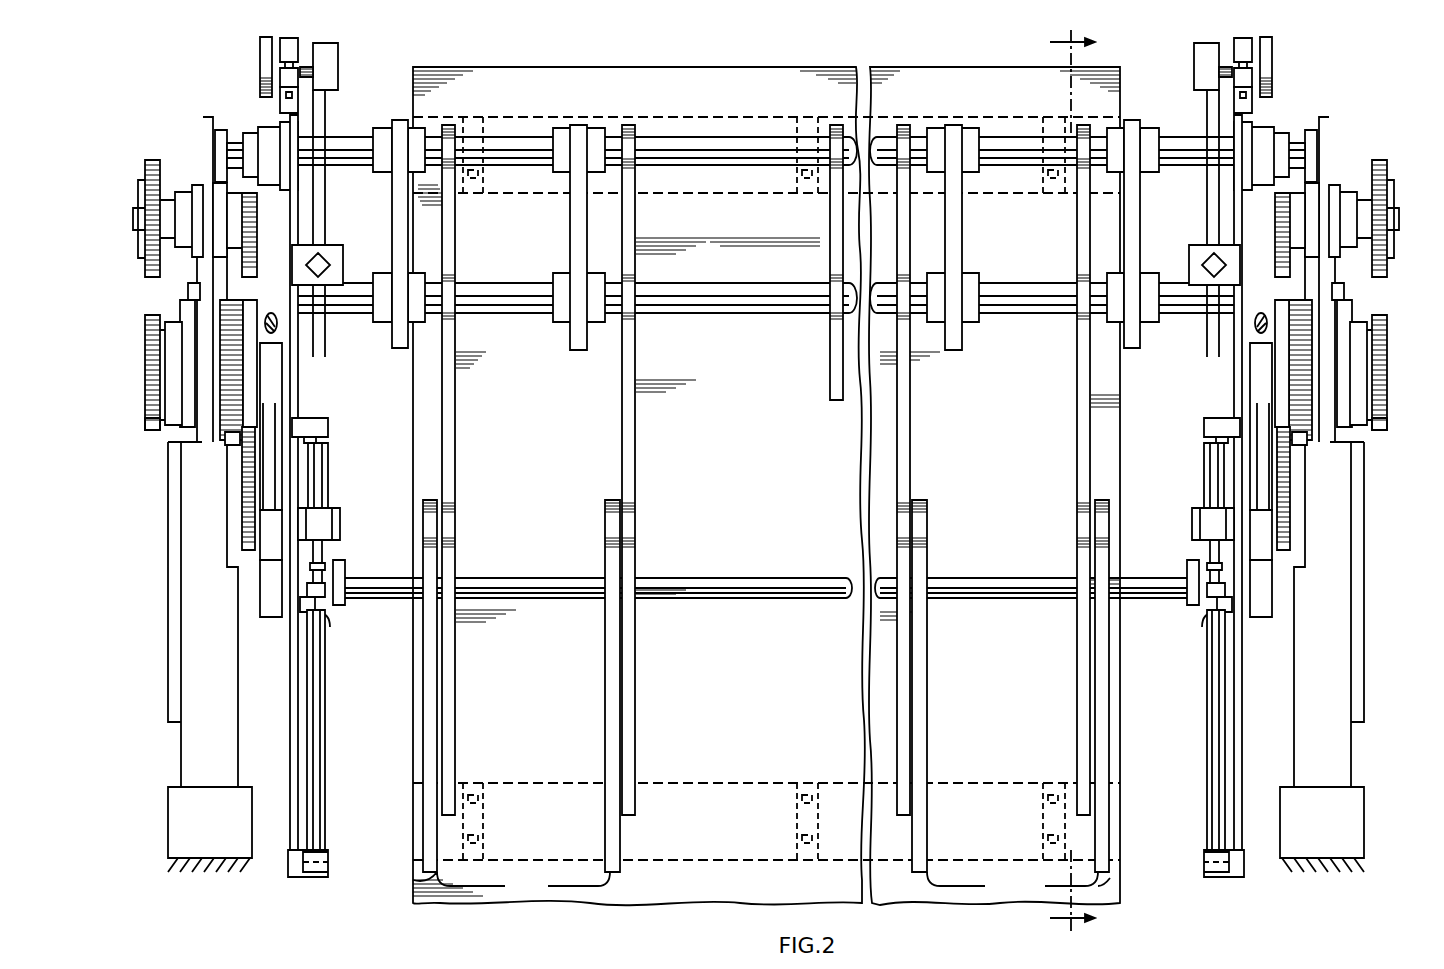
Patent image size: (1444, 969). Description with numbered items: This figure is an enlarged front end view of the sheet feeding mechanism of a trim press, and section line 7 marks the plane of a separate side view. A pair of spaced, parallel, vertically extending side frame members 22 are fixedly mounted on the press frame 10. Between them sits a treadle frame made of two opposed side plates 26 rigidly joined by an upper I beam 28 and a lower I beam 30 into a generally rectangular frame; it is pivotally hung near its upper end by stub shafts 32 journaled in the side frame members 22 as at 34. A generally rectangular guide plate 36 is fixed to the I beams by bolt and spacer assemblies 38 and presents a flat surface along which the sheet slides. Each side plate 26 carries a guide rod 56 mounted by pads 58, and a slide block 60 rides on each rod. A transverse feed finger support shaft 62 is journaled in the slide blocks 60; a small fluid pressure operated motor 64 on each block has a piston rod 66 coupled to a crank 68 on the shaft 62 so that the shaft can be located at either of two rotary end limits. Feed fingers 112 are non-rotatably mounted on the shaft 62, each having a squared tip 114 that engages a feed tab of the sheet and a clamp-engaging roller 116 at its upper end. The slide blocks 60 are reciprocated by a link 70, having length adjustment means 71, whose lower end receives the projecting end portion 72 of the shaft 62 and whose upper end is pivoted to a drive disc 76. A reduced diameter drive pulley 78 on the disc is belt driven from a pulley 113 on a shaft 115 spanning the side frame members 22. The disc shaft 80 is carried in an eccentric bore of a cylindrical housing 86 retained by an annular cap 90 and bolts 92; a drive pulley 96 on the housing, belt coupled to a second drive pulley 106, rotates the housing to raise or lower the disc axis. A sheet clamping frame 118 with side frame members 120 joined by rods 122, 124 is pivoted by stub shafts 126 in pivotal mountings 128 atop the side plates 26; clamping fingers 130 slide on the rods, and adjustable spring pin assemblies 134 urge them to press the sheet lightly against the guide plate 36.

The section line 7- 7 is at (1064, 482).
The press frame 10 is at (160, 808).
The side frame member 22 is at (203, 124).
The side plate 26 is at (300, 386).
The upper I beam 28 is at (374, 122).
The lower I beam 30 is at (393, 848).
The stub shaft 32 is at (232, 149).
The journal 34 is at (220, 134).
The guide plate 36 is at (738, 95).
The bolt and spacer assembly 38 is at (485, 838).
The guide rod 56 is at (323, 702).
The pad 58 is at (327, 426).
The slide block 60 is at (326, 620).
The feed finger support shaft 62 is at (555, 577).
The fluid pressure operated motor 64 is at (326, 488).
The piston rod 66 is at (323, 550).
The crank 68 is at (344, 570).
The link 70 is at (256, 464).
The link length adjustment means 71 is at (262, 532).
The shaft end portion 72 is at (280, 600).
The drive disc 76 is at (246, 492).
The drive pulley 78 is at (226, 440).
The coaxial shaft 80 is at (215, 378).
The cylindrical housing 86 is at (159, 347).
The annular cap 90 is at (180, 302).
The bolt 92 is at (766, 279).
The drive pulley 96 is at (144, 424).
The second drive pulley 106 is at (145, 168).
The feed finger 112 is at (430, 744).
The pulley 113 is at (232, 278).
The feed finger tip 114 is at (761, 882).
The shaft 115 is at (278, 312).
The clamp-engaging roller 116 is at (442, 520).
The sheet clamping frame 118 is at (475, 128).
The clamping frame side frame member 120 is at (319, 113).
The transverse rod 122 is at (723, 158).
The transverse rod 124 is at (757, 292).
The stub shaft 126 is at (312, 58).
The pivotal mounting 128 is at (286, 78).
The clamping finger 130 is at (455, 406).
The adjustable spring pin assembly 134 is at (343, 259).